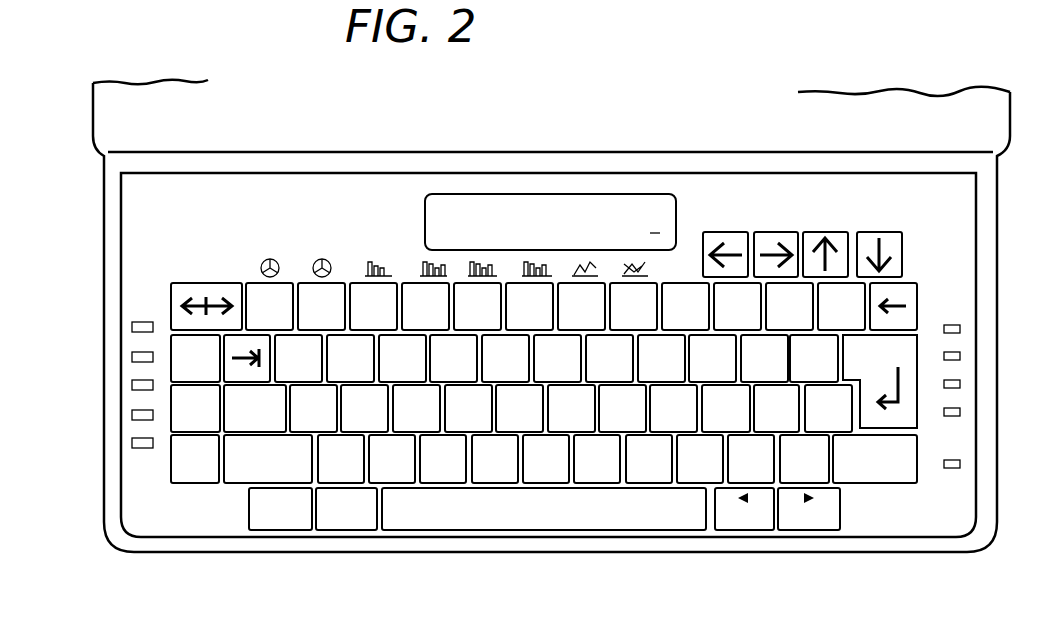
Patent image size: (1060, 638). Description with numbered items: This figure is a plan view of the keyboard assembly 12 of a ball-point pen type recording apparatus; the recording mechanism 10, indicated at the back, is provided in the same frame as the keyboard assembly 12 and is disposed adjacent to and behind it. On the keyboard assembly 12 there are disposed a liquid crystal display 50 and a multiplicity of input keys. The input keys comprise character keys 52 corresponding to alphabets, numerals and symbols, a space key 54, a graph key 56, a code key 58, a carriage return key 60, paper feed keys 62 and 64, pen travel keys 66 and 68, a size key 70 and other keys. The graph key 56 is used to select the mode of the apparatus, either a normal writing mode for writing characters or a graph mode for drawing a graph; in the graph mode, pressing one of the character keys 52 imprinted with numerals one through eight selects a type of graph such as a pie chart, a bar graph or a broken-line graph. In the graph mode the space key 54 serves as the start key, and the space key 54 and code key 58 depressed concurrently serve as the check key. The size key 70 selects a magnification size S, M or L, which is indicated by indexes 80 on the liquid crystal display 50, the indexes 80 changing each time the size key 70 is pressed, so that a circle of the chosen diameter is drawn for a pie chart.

The recording mechanism 10 is at (965, 109).
The keyboard assembly 12 is at (580, 363).
The liquid crystal display 50 is at (514, 196).
The indexes 80 is at (574, 194).
The character keys 52 is at (600, 494).
The space key 54 is at (556, 522).
The graph key 56 is at (277, 531).
The code key 58 is at (195, 484).
The carriage return key 60 is at (913, 423).
The paper feed key 62 is at (889, 235).
The paper feed key 64 is at (817, 235).
The pen travel key 66 is at (778, 233).
The pen travel key 68 is at (714, 233).
The size key 70 is at (960, 384).